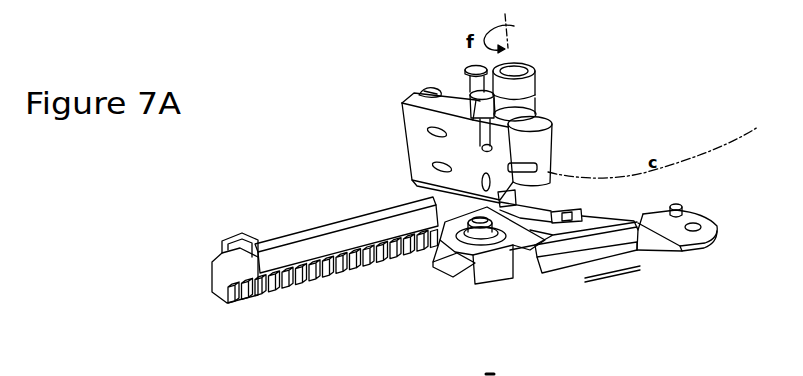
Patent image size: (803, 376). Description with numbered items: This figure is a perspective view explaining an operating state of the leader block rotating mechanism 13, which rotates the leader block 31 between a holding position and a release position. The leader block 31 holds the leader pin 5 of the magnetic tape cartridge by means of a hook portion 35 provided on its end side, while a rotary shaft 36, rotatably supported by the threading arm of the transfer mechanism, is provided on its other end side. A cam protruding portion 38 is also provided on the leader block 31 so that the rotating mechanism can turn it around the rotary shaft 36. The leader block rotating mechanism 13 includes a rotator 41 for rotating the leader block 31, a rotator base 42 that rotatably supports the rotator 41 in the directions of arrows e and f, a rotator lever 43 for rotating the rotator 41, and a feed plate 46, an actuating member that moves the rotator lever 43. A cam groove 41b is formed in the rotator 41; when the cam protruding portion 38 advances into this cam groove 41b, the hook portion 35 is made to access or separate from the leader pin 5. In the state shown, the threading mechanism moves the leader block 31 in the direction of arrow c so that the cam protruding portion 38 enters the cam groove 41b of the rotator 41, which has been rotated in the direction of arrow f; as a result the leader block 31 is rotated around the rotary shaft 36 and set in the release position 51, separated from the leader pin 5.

The leader pin 5 is at (470, 64).
The rotary shaft 36 is at (517, 66).
The hook portion 35 is at (427, 91).
The leader block 31 is at (410, 149).
The release position 51 is at (412, 158).
The cam protruding portion 38 is at (522, 208).
The cam groove 41b is at (586, 211).
The rotator 41 is at (565, 238).
The rotator base 42 is at (670, 232).
The rotator lever 43 is at (498, 268).
The feed plate 46 is at (300, 241).
The leader block rotating mechanism 13 is at (616, 365).